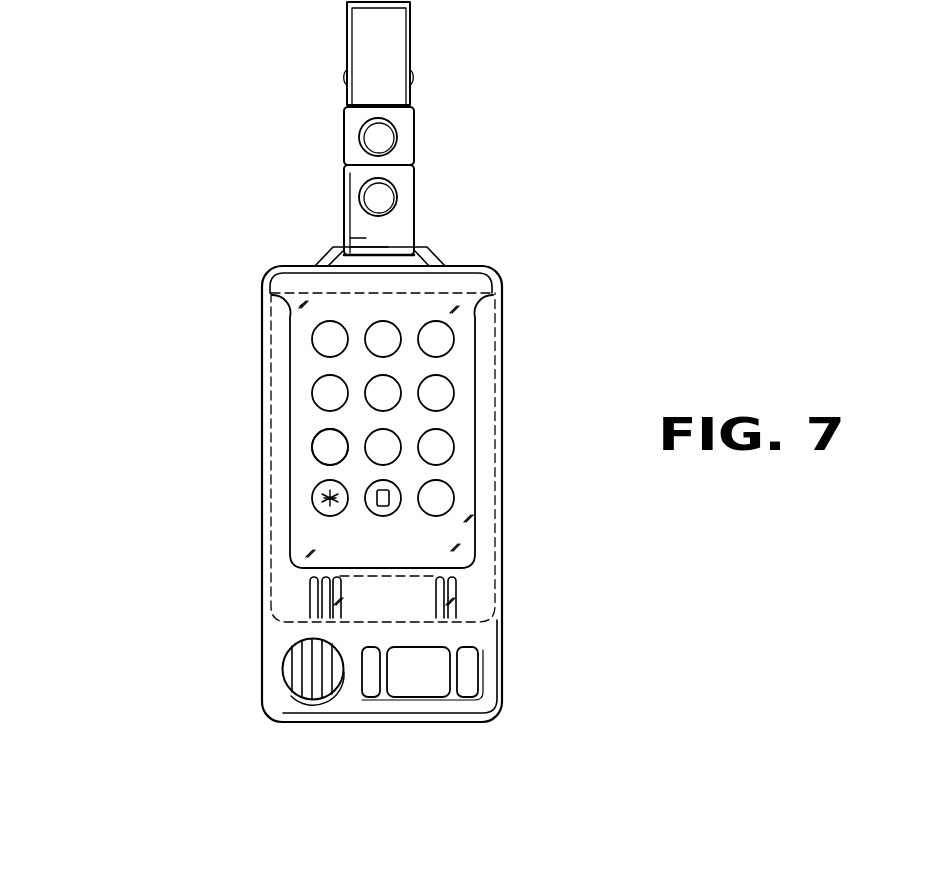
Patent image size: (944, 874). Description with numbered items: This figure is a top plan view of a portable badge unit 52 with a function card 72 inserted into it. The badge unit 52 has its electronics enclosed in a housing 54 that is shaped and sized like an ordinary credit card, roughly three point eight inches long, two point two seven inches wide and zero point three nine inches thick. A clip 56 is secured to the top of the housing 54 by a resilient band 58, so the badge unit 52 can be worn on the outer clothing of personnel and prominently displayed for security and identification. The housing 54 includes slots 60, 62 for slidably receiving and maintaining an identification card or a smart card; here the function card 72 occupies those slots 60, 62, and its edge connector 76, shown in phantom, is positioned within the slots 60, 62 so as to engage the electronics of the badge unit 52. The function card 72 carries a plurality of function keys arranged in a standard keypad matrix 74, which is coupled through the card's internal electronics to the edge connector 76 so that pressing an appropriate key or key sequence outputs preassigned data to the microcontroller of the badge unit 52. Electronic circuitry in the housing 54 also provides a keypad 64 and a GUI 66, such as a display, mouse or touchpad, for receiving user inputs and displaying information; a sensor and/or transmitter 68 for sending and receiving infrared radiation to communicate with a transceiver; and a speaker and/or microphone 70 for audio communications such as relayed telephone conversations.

The badge unit 52 is at (165, 222).
The housing 54 is at (503, 640).
The clip 56 is at (410, 35).
The resilient band 58 is at (414, 207).
The slot 60 is at (482, 368).
The slot 62 is at (275, 330).
The keypad 64 is at (495, 717).
The GUI 66 is at (422, 694).
The sensor and/or transmitter 68 is at (376, 681).
The speaker and/or microphone 70 is at (283, 662).
The function card 72 is at (460, 468).
The keypad matrix 74 is at (313, 448).
The edge connector 76 is at (308, 597).